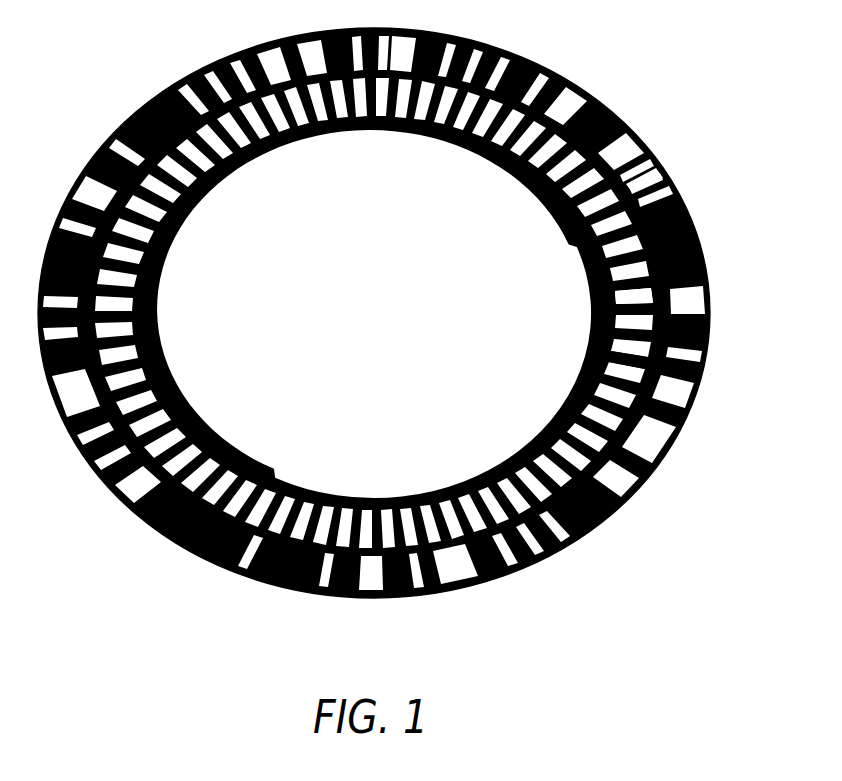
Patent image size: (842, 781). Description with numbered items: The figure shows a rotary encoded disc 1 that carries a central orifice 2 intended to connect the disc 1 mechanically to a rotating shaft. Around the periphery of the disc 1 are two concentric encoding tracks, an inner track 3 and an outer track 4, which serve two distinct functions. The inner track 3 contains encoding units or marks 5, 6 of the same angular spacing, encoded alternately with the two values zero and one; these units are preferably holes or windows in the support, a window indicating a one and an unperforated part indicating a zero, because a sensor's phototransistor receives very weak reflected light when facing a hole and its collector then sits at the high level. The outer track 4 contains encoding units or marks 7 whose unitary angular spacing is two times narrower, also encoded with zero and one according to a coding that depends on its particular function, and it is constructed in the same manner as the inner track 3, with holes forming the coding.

The encoded disc 1 is at (712, 363).
The central orifice 2 is at (374, 340).
The inner track 3 is at (521, 472).
The outer track 4 is at (617, 497).
The encoding unit 5 is at (621, 363).
The encoding unit 6 is at (630, 300).
The encoding unit 7 is at (692, 192).